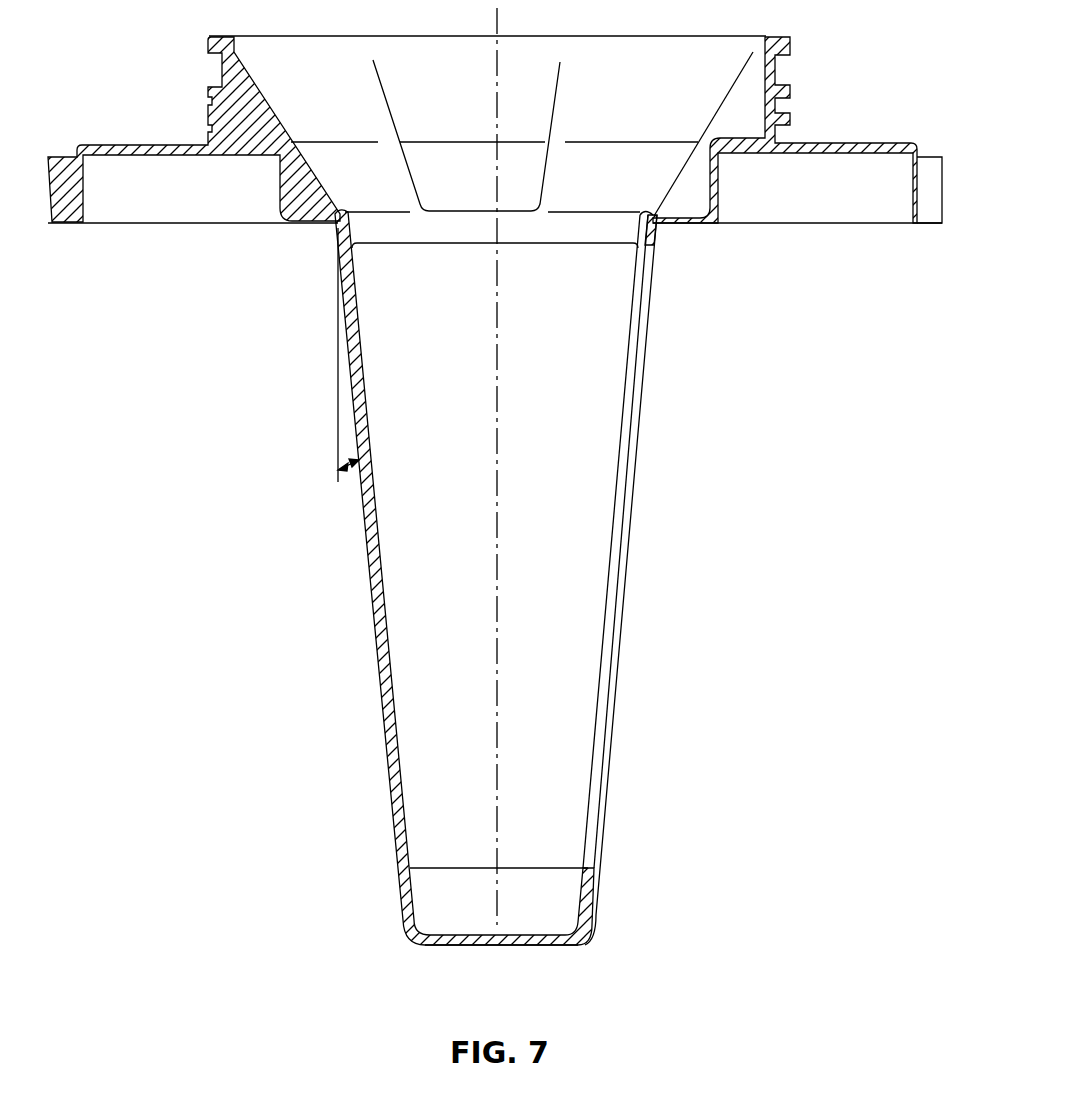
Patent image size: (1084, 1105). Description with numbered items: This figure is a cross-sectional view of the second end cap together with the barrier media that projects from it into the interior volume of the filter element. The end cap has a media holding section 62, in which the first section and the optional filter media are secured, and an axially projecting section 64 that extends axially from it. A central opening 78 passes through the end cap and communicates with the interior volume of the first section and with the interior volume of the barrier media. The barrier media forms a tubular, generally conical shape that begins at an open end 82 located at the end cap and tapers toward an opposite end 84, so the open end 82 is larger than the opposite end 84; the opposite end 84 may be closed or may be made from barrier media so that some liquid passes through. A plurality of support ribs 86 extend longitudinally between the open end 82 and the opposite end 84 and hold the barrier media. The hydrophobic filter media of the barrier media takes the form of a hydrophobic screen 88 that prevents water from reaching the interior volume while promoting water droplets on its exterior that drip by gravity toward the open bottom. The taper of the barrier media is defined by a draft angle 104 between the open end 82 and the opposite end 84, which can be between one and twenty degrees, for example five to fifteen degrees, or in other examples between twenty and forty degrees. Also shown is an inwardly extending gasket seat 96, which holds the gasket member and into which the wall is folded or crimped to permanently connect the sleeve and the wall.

The media holding section 62 is at (888, 142).
The axially projecting section 64 is at (787, 90).
The central opening 78 is at (622, 172).
The open end 82 is at (458, 222).
The opposite end 84 is at (557, 945).
The support ribs 86 is at (378, 650).
The hydrophobic screen 88 is at (612, 615).
The gasket seat 96 is at (222, 70).
The draft angle 104 is at (350, 462).